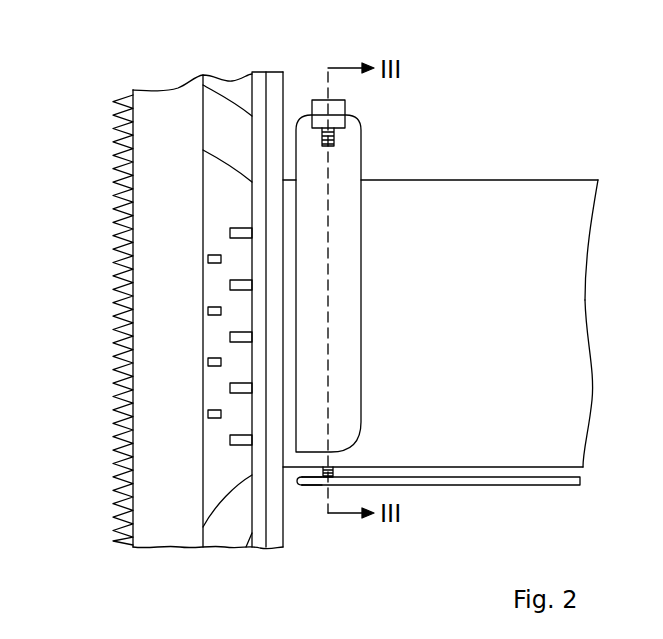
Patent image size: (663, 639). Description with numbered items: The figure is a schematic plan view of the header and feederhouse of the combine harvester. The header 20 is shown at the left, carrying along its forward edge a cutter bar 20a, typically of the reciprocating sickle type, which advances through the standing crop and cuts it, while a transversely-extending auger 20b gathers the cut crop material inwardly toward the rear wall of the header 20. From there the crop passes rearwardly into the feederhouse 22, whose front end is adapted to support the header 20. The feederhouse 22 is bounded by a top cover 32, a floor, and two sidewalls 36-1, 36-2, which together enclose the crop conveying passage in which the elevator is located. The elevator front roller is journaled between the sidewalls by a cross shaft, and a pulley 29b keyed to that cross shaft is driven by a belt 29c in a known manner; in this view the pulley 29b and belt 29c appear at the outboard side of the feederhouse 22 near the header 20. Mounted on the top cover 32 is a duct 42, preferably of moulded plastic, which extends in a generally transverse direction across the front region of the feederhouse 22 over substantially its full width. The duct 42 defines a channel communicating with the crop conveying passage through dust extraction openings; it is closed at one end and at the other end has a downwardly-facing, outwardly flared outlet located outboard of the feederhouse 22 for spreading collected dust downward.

The header 20 is at (162, 90).
The cutter bar 20a is at (118, 350).
The auger 20b is at (200, 542).
The feederhouse 22 is at (505, 180).
The top cover 32 is at (495, 338).
The sidewall 36-1 is at (445, 470).
The sidewall 36-2 is at (428, 178).
The pulley 29b is at (312, 487).
The belt 29c is at (545, 487).
The duct 42 is at (361, 245).